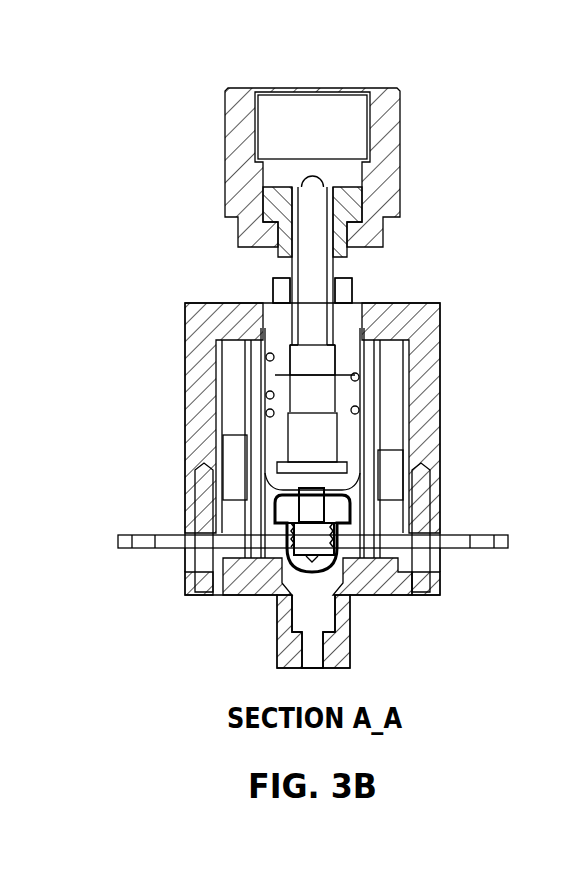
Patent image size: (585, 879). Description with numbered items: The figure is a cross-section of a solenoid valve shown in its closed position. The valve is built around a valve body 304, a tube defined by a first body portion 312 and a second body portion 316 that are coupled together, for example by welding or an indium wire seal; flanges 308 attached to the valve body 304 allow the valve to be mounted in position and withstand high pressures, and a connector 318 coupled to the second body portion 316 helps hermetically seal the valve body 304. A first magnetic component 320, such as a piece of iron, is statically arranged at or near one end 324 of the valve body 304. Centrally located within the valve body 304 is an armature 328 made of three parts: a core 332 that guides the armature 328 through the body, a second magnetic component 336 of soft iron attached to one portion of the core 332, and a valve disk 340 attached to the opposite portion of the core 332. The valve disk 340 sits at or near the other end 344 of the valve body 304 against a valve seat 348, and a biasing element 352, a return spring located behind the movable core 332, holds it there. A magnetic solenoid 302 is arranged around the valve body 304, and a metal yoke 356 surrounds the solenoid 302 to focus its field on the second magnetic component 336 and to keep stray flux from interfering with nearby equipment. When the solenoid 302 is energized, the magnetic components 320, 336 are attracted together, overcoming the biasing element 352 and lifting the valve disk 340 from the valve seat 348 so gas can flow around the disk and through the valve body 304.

The magnetic solenoid 302 is at (395, 387).
The valve body 304 is at (355, 625).
The flanges 308 is at (508, 536).
The first body portion 312 is at (275, 290).
The second body portion 316 is at (277, 626).
The connector 318 is at (400, 172).
The first magnetic component 320 is at (365, 305).
The end of the valve body 324 is at (239, 286).
The armature 328 is at (373, 462).
The core 332 is at (268, 488).
The second magnetic component 336 is at (340, 393).
The valve disk 340 is at (410, 522).
The end of the valve body 344 is at (261, 633).
The valve seat 348 is at (352, 582).
The biasing element 352 is at (352, 377).
The metal yoke 356 is at (382, 487).